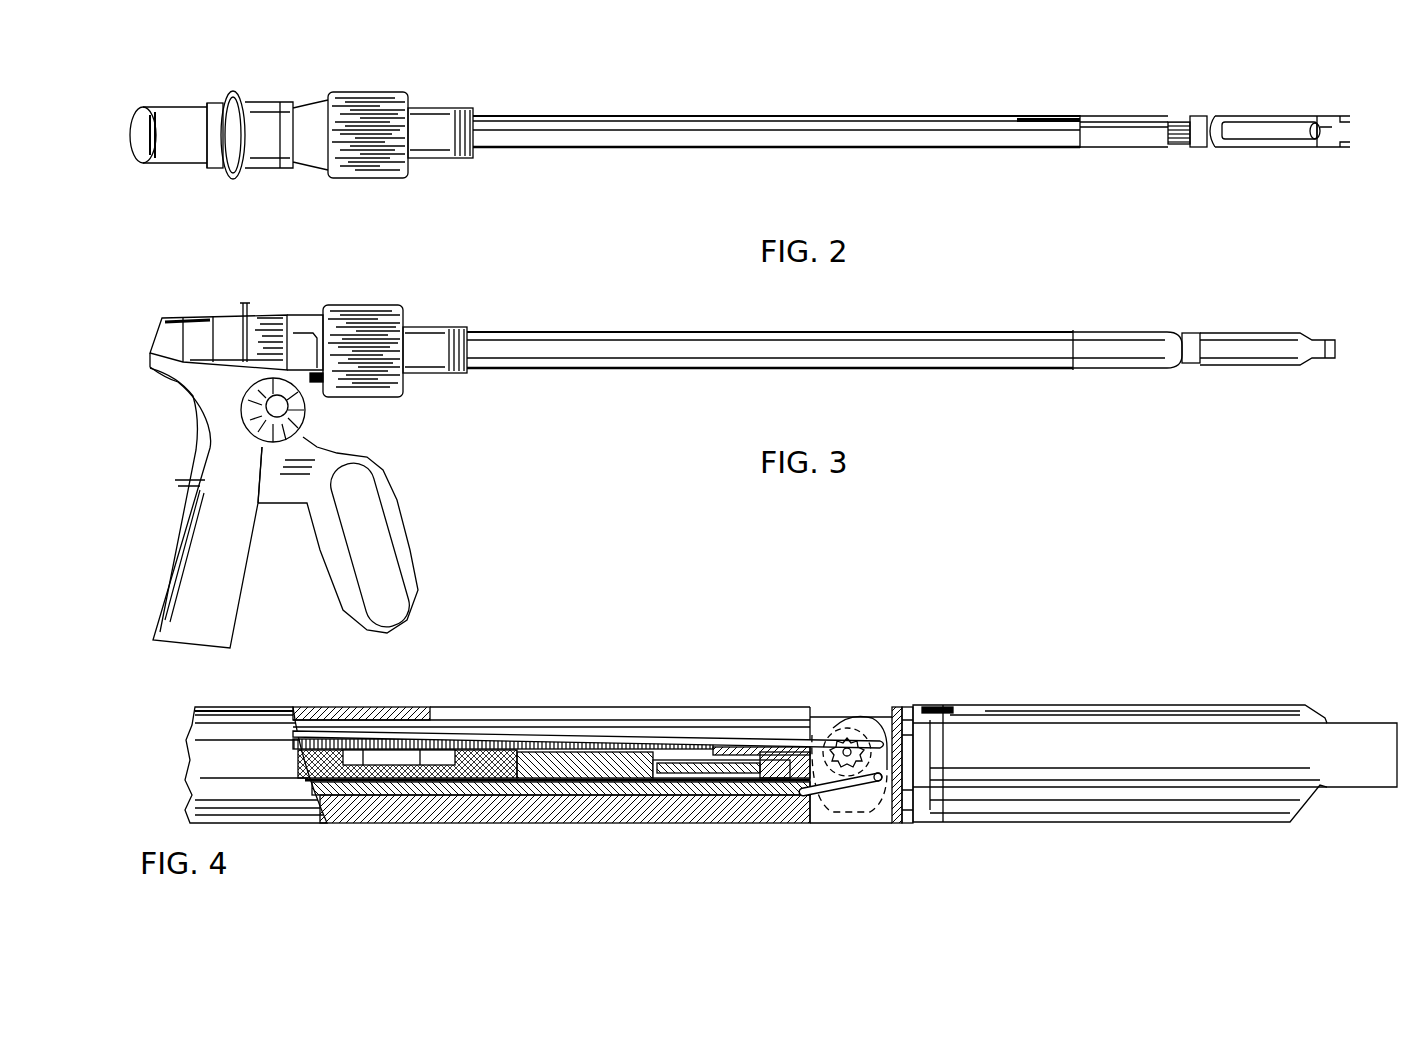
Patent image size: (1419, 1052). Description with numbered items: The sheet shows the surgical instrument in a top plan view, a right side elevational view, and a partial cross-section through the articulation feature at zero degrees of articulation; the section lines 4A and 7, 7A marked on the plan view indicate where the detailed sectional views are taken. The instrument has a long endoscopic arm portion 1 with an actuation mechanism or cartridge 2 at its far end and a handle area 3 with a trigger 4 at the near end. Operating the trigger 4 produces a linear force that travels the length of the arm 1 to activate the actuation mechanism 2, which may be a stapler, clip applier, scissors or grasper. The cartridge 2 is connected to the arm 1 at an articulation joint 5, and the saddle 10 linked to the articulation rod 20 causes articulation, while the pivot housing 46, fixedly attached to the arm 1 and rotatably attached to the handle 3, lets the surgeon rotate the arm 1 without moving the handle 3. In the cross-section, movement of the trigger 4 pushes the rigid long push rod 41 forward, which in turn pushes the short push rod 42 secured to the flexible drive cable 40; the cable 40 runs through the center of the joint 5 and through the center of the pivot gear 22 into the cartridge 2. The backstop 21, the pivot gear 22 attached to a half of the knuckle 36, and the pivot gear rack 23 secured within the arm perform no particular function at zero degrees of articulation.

In FIG. 2, the endoscopic arm portion 1 is at (677, 132).
In FIG. 3, the endoscopic arm portion 1 is at (755, 348).
In FIG. 4, the endoscopic arm portion 1 is at (550, 696).
In FIG. 2, the actuation mechanism 2 is at (1332, 148).
In FIG. 3, the actuation mechanism 2 is at (1323, 352).
In FIG. 4, the actuation mechanism 2 is at (1220, 694).
In FIG. 3, the handle area 3 is at (190, 477).
In FIG. 2, the trigger 4 is at (1013, 117).
In FIG. 3, the trigger 4 is at (397, 537).
In FIG. 2, the section line 4A is at (1168, 140).
In FIG. 2, the articulation mechanism or joint 5 is at (1197, 170).
In FIG. 3, the articulation mechanism or joint 5 is at (1193, 380).
In FIG. 4, the articulation mechanism or joint 5 is at (1004, 628).
In FIG. 2, the section line 7 is at (103, 132).
In FIG. 2, the section line 7A is at (290, 132).
In FIG. 2, the saddle 10 is at (262, 118).
In FIG. 3, the saddle 10 is at (277, 322).
In FIG. 4, the articulation rod 20 is at (628, 733).
In FIG. 4, the backstop 21 is at (827, 812).
In FIG. 4, the pivot gear 22 is at (865, 784).
In FIG. 4, the pivot gear rack 23 is at (836, 730).
In FIG. 4, the knuckle 36 is at (885, 722).
In FIG. 4, the drive cable 40 is at (715, 762).
In FIG. 4, the long push rod 41 is at (470, 768).
In FIG. 4, the short push rod 42 is at (577, 797).
In FIG. 2, the pivot housing 46 is at (352, 112).
In FIG. 3, the pivot housing 46 is at (343, 317).